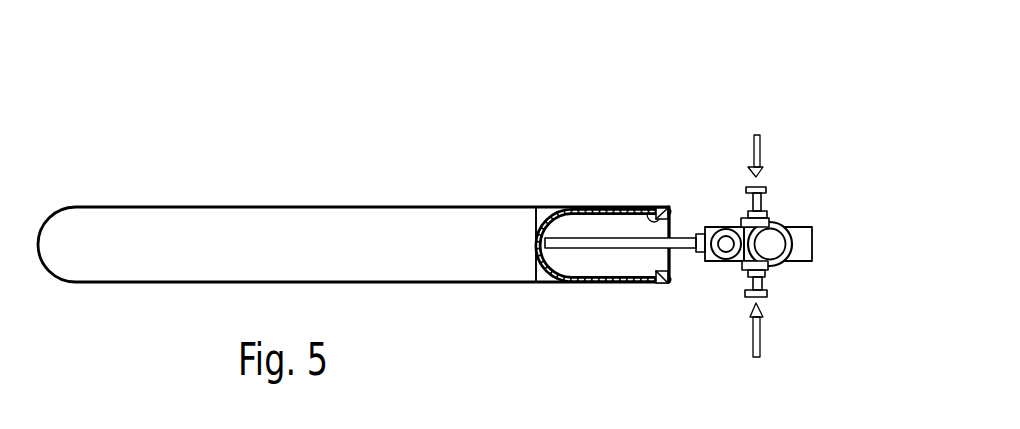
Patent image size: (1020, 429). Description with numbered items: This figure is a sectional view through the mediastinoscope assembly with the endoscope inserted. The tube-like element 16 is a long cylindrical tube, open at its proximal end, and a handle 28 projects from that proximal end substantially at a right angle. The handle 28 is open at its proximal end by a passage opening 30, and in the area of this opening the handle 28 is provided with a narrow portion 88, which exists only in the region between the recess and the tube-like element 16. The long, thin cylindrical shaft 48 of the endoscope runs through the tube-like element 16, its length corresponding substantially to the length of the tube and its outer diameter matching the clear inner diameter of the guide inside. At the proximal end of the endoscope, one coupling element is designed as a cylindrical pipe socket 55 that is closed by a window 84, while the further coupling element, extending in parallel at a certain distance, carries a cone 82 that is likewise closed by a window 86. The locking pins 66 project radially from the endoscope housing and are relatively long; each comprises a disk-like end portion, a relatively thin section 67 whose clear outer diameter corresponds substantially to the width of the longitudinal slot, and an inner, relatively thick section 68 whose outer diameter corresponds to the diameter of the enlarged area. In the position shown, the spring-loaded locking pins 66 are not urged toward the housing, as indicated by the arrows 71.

The tube-like element 16 is at (347, 217).
The handle 28 is at (592, 207).
The narrow portion 88 is at (643, 207).
The passage opening 30 is at (658, 258).
The shaft 48 is at (599, 247).
The pipe socket 55 is at (722, 226).
The cone 82 is at (785, 221).
The window 84 is at (725, 248).
The window 86 is at (771, 248).
The thick section 68 is at (745, 217).
The thin section 67 is at (767, 213).
The locking pins 66 is at (765, 192).
The arrows 71 is at (758, 163).